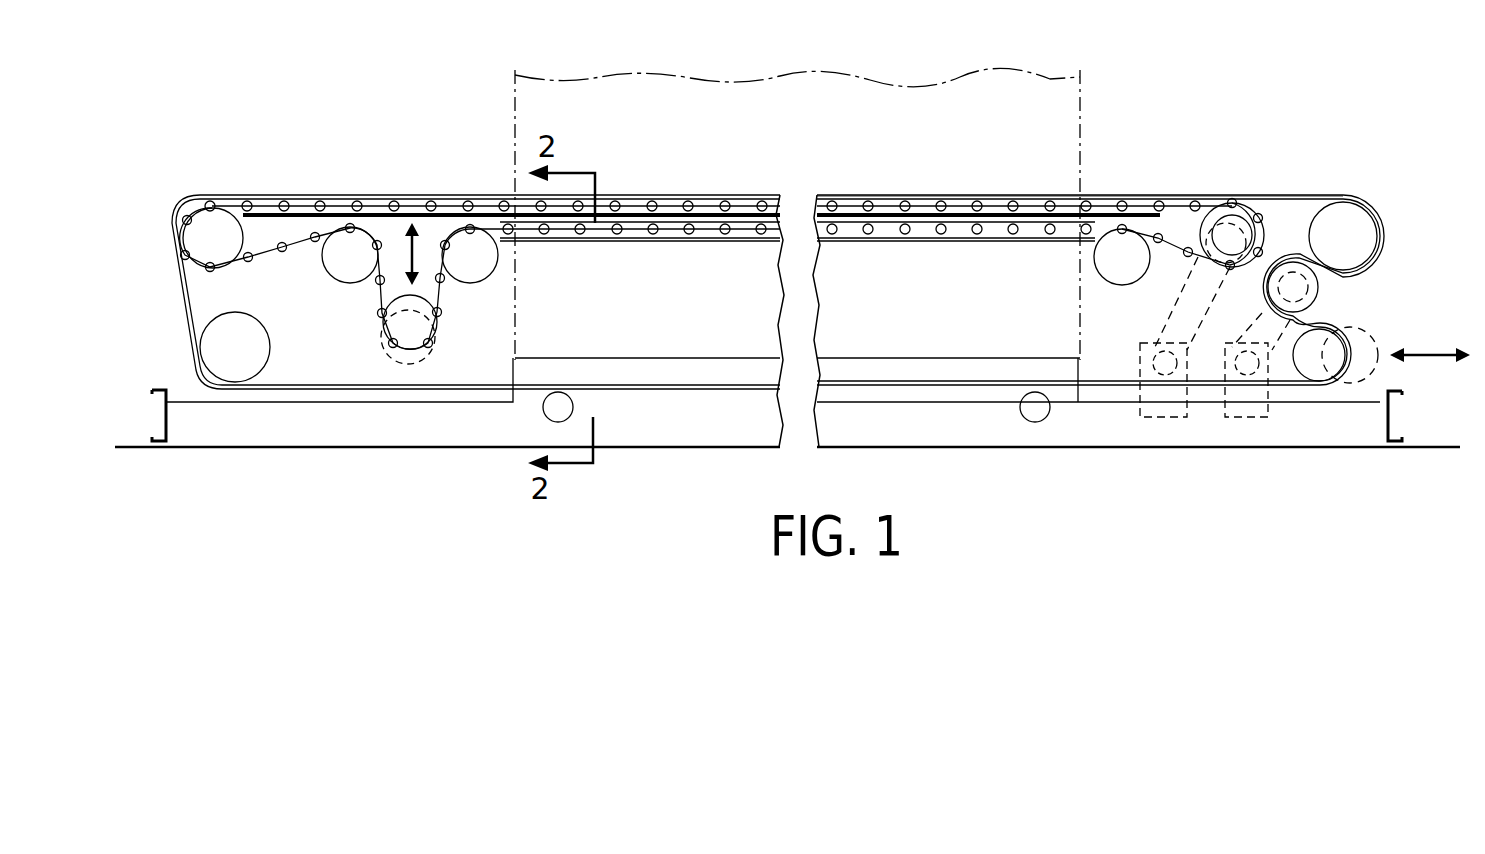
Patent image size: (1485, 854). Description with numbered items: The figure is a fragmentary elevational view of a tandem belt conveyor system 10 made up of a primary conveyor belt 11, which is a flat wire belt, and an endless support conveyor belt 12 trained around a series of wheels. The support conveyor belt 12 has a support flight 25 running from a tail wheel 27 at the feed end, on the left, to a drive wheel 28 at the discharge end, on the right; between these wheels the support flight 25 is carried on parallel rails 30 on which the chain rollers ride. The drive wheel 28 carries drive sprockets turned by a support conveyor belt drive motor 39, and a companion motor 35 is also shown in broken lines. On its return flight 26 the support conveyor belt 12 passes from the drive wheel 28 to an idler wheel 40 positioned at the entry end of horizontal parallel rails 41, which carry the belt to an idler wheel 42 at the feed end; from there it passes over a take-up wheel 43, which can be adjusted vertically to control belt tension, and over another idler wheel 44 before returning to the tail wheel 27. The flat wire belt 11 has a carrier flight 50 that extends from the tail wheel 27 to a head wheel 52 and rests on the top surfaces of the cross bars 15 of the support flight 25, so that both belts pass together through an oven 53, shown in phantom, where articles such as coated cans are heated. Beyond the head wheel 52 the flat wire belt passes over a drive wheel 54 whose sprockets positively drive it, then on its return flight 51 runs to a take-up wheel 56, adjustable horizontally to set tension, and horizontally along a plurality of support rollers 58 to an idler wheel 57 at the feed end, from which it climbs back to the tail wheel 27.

The tandem belt conveyor system 10 is at (278, 126).
The primary conveyor belt 11 is at (1301, 186).
The support conveyor belt 12 is at (1169, 256).
The cross bars 15 is at (1050, 202).
The support flight 25 is at (884, 204).
The return flight 26 is at (668, 241).
The tail wheel 27 is at (206, 269).
The drive wheel 28 is at (1200, 235).
The parallel rails 30 is at (375, 212).
The support bracket 35 is at (1225, 425).
The support conveyor belt drive motor 39 is at (1173, 420).
The idler wheel 40 is at (1100, 280).
The parallel rails 41 is at (960, 242).
The idler wheel 42 is at (467, 284).
The take-up wheel 43 is at (385, 325).
The idler wheel 44 is at (350, 284).
The carrier flight 50 is at (740, 194).
The return flight 51 is at (735, 390).
The head wheel 52 is at (1378, 216).
The oven 53 is at (1083, 141).
The drive wheel 54 is at (1320, 288).
The take-up wheel 56 is at (1292, 386).
The idler wheel 57 is at (270, 336).
The support rollers 58 is at (545, 410).